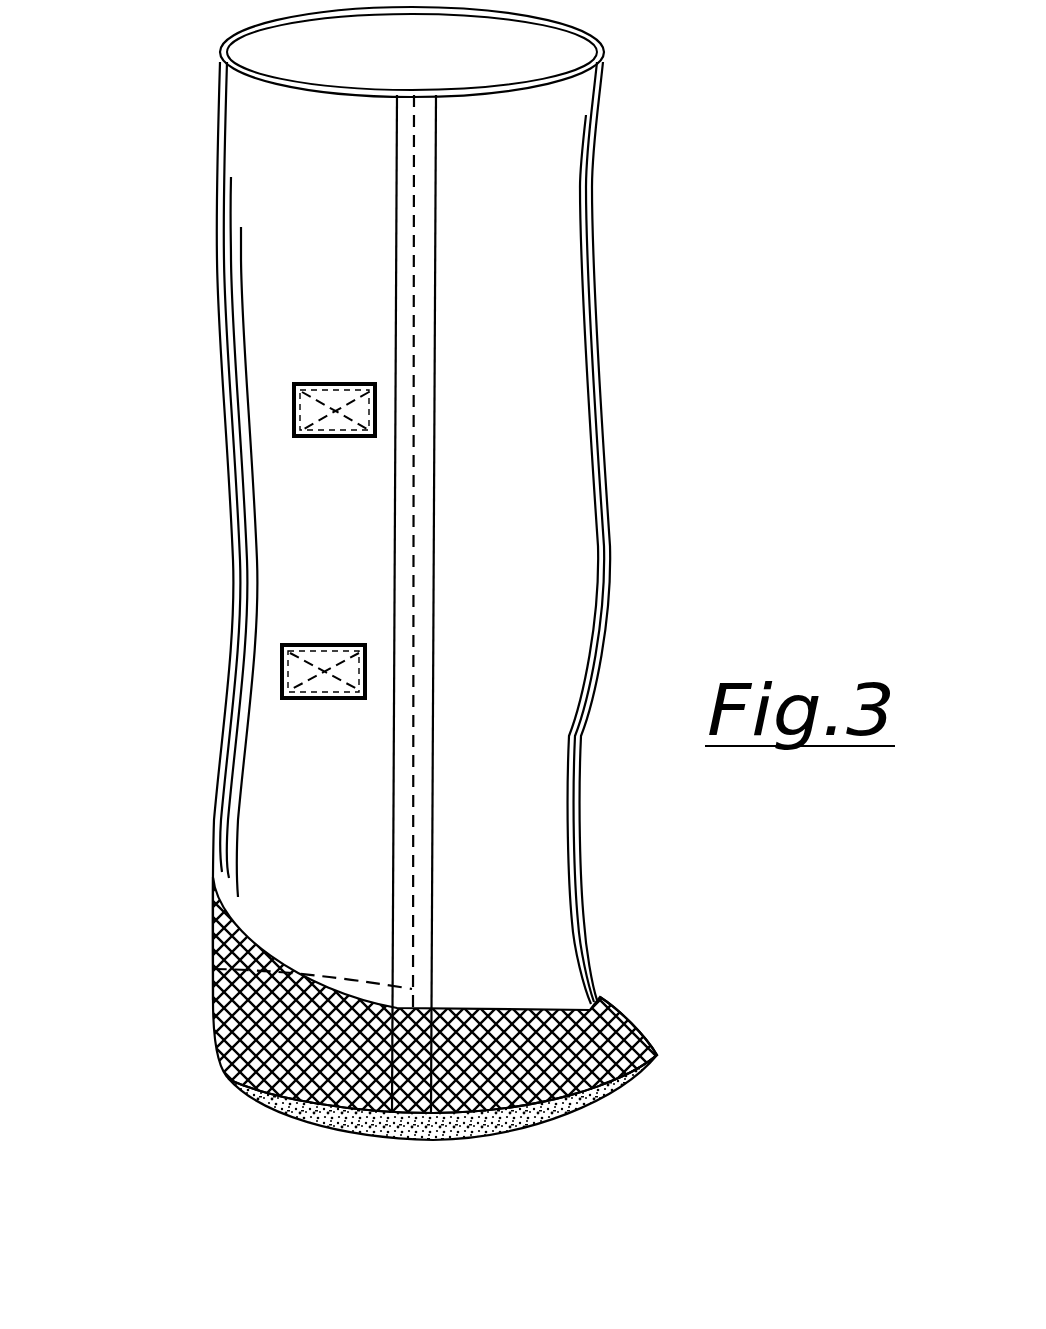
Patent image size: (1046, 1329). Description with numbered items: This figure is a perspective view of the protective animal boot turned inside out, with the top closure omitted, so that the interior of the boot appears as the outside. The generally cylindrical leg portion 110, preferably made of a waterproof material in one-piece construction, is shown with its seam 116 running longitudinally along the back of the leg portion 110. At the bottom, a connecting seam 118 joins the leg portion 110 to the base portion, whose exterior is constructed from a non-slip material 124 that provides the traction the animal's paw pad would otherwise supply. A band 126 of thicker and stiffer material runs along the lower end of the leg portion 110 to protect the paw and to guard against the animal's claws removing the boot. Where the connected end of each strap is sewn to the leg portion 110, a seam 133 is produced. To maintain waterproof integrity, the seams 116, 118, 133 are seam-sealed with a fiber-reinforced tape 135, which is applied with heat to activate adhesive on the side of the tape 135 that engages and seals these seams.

The leg portion 110 is at (218, 83).
The fiber-reinforced tape 135 is at (428, 222).
The seam 133 is at (292, 438).
The seam 116 is at (213, 969).
The connecting seam 118 is at (450, 1137).
The non-slip material 124 is at (248, 1095).
The band 126 is at (610, 1018).